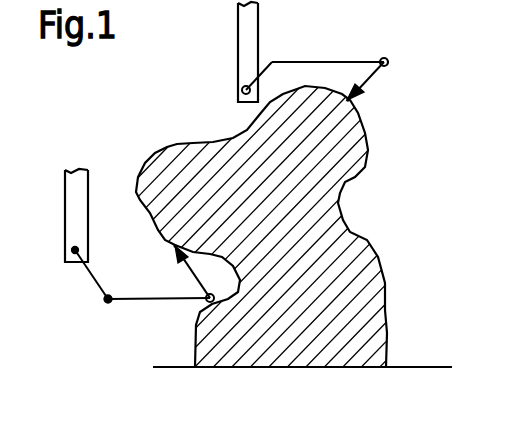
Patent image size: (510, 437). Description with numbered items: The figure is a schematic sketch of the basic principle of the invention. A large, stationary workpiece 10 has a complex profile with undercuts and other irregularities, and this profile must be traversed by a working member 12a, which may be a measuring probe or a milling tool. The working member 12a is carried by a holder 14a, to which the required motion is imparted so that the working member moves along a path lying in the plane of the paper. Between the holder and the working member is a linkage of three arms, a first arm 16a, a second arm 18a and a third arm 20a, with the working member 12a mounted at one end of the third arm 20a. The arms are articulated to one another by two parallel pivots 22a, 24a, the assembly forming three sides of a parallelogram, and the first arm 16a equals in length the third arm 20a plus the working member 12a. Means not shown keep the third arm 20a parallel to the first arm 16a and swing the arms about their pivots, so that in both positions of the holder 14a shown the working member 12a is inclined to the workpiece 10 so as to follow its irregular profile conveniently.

The workpiece 10 is at (370, 280).
The working member 12a is at (360, 102).
The holder 14a is at (238, 58).
The first arm 16a is at (268, 68).
The second arm 18a is at (313, 62).
The third arm 20a is at (386, 68).
The pivot 22a is at (106, 304).
The pivot 24a is at (206, 294).